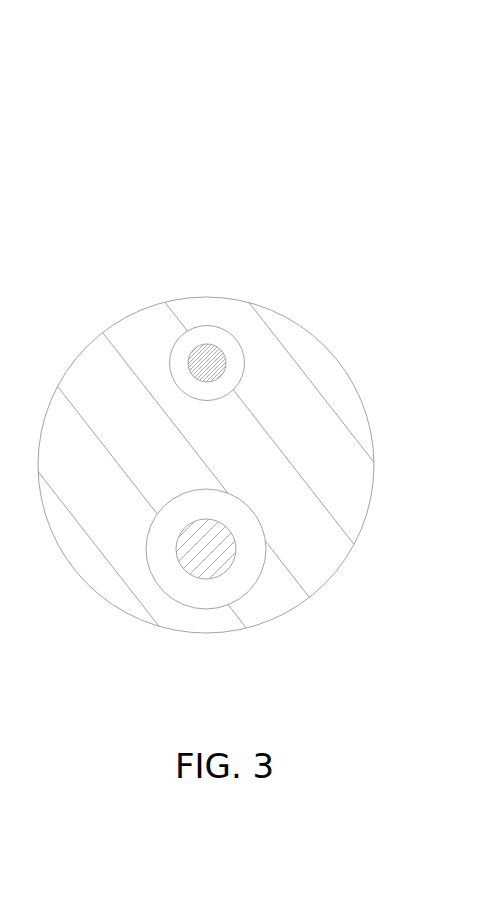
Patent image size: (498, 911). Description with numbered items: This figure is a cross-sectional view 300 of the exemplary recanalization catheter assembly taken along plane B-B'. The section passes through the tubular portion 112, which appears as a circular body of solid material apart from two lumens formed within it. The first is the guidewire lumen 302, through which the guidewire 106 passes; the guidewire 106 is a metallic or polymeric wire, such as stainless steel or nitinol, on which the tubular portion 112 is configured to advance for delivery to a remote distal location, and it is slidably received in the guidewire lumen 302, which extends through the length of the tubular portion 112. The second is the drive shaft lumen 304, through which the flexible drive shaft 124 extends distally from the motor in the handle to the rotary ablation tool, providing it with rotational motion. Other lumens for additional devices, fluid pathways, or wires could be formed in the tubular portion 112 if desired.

The cross-sectional view 300 is at (182, 47).
The tubular portion 112 is at (312, 360).
The guidewire lumen 302 is at (169, 362).
The guidewire 106 is at (207, 362).
The drive shaft lumen 304 is at (265, 548).
The flexible drive shaft 124 is at (205, 550).